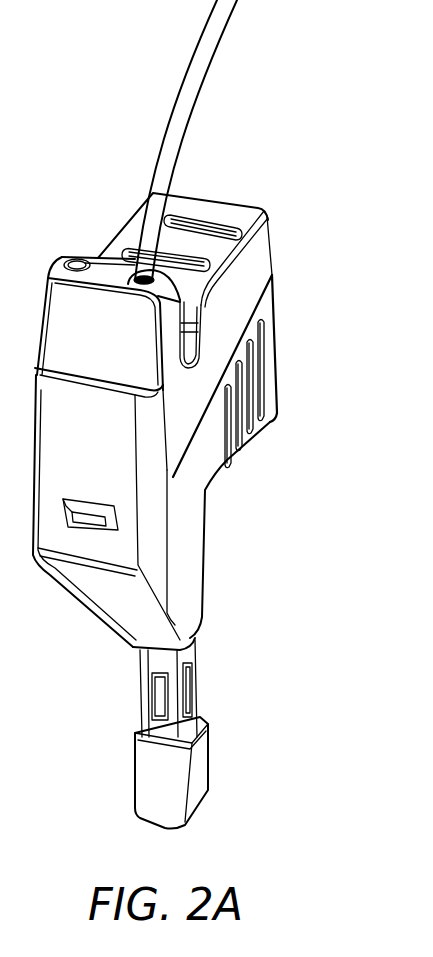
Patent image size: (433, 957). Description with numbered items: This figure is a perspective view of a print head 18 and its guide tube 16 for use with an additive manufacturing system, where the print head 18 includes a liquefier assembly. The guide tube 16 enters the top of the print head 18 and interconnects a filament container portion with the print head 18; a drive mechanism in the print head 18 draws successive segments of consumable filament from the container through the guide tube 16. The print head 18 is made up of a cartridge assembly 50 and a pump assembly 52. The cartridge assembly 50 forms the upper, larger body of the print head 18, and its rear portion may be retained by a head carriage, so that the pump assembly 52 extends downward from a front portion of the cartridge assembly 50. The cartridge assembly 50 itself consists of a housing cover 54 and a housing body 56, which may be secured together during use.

The guide tube 16 is at (216, 32).
The print head 18 is at (79, 222).
The cartridge assembly 50 is at (237, 413).
The pump assembly 52 is at (116, 728).
The housing cover 54 is at (263, 258).
The housing body 56 is at (200, 493).